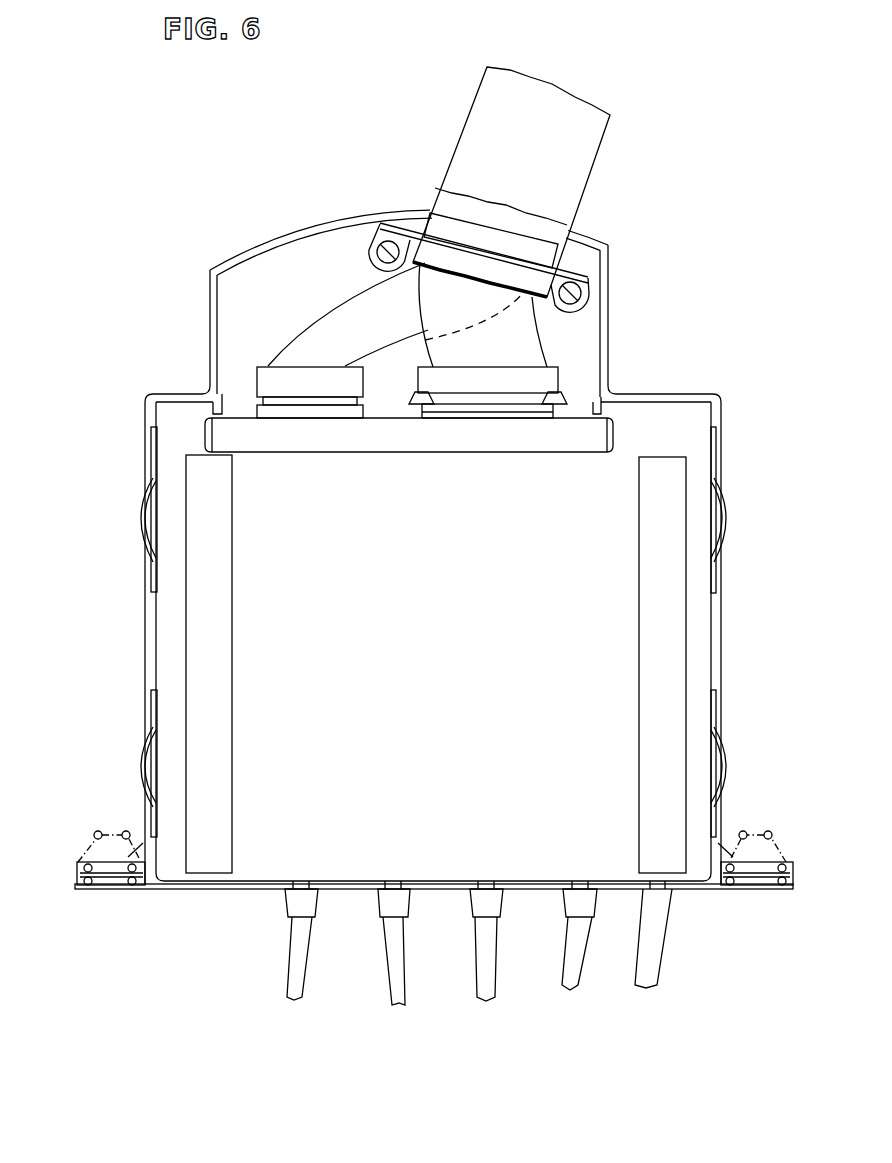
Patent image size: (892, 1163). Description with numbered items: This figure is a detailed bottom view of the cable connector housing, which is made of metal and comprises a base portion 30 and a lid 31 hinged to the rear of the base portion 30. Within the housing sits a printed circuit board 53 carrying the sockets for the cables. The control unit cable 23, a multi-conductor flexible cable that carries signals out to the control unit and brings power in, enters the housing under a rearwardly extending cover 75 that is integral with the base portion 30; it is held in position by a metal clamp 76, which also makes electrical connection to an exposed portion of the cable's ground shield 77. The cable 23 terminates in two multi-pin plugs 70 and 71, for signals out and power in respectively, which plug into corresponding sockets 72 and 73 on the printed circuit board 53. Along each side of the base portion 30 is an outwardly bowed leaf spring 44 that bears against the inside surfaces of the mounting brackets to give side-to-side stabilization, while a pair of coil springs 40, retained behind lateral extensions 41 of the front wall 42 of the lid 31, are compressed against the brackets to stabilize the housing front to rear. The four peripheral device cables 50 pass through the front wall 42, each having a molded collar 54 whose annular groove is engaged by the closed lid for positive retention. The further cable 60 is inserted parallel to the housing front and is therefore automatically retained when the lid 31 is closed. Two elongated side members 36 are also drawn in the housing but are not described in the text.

The control unit cable 23 is at (558, 103).
The ground shield 77 is at (507, 218).
The metal clamp 76 is at (488, 247).
The rearwardly extending cover 75 is at (273, 242).
The base portion 30 is at (173, 400).
The lid 31 is at (150, 622).
The multi-pin plug 71 is at (330, 373).
The socket 73 is at (300, 415).
The multi-pin plug 70 is at (505, 377).
The socket 72 is at (413, 415).
The printed circuit board 53 is at (530, 445).
The side bar 36 is at (225, 580).
The leaf springs 44 is at (142, 520).
The front wall 42 is at (232, 890).
The lateral extensions 41 is at (105, 888).
The coil springs 40 is at (108, 830).
The collar 54 is at (385, 903).
The peripheral device cables 50 is at (392, 975).
The cable 60 is at (658, 955).